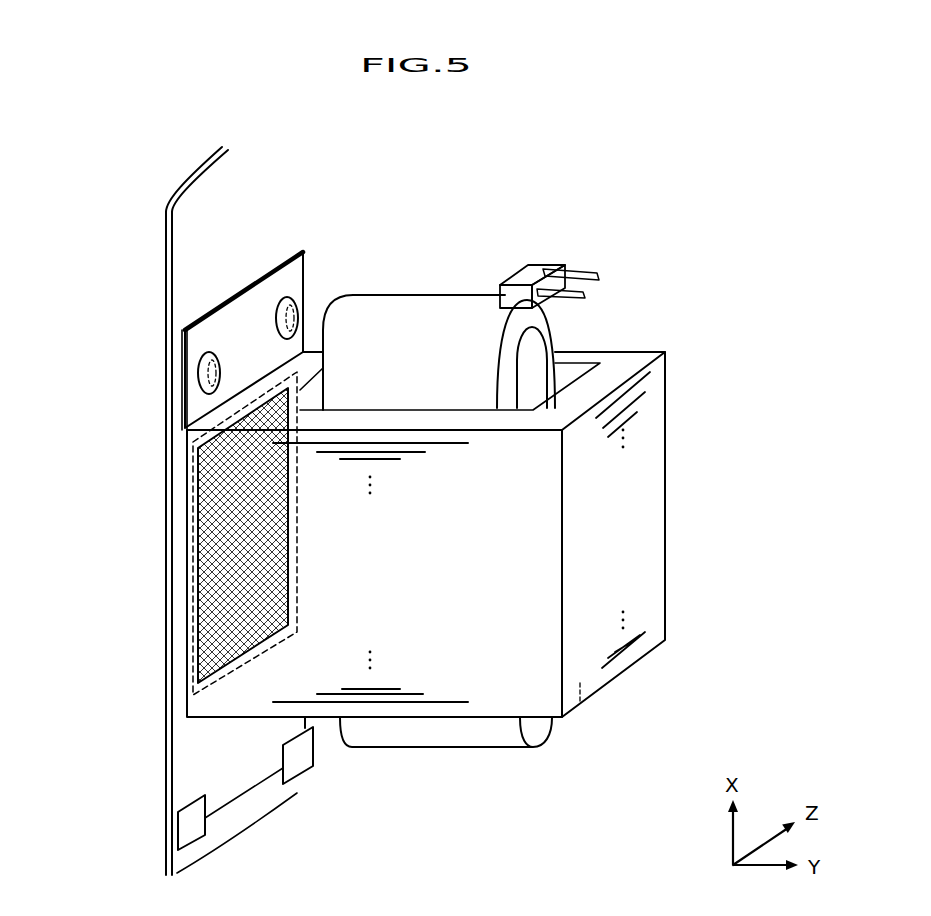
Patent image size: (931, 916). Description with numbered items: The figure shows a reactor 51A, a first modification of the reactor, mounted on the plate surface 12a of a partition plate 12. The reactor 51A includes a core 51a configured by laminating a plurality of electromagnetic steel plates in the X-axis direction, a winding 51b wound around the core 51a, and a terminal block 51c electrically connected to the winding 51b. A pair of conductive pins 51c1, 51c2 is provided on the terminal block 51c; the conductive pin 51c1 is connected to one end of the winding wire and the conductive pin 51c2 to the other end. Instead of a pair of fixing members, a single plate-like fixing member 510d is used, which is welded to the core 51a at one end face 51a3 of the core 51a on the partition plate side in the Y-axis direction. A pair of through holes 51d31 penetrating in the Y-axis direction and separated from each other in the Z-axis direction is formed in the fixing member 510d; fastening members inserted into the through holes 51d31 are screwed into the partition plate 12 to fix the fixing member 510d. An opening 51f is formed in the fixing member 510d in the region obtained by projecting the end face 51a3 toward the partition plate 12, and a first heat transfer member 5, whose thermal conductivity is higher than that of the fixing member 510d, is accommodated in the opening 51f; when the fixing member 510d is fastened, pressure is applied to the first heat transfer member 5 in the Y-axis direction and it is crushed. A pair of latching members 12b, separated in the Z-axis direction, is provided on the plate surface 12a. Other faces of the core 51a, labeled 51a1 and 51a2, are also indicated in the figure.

The partition plate 12 is at (166, 226).
The plate surface 12a is at (207, 195).
The latching members 12b is at (297, 752).
The first heat transfer member 5 is at (212, 497).
The reactor 51A is at (406, 485).
The core 51a is at (409, 558).
The top face of housing 51a1 is at (638, 357).
The lower corner of housing 51a2 is at (587, 703).
The one end face of the core 51a3 is at (205, 410).
The winding 51b is at (424, 300).
The terminal block 51c is at (528, 272).
The conductive pin 51c1 is at (587, 273).
The conductive pin 51c2 is at (583, 293).
The through holes 51d31 is at (200, 362).
The opening 51f is at (195, 459).
The fixing member 510d is at (283, 255).